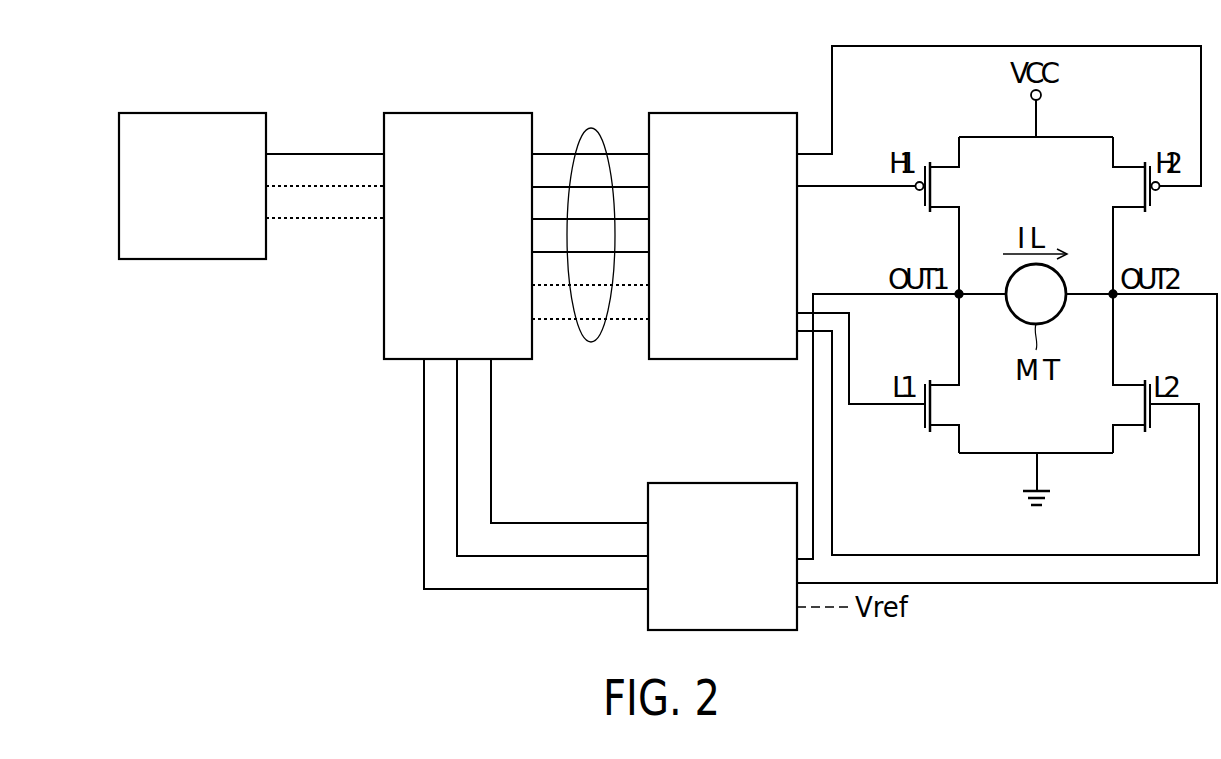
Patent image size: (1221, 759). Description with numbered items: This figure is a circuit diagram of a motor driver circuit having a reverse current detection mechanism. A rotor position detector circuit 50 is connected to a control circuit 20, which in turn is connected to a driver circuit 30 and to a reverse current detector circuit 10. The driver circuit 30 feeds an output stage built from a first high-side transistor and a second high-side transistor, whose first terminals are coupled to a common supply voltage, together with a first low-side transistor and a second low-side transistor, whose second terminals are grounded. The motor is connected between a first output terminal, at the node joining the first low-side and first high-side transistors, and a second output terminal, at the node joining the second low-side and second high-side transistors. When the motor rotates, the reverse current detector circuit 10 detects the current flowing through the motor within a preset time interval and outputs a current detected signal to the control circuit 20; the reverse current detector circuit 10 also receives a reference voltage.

The reverse current detector circuit 10 is at (648, 612).
The control circuit 20 is at (457, 113).
The driver circuit 30 is at (723, 113).
The rotor position detector circuit 50 is at (193, 113).